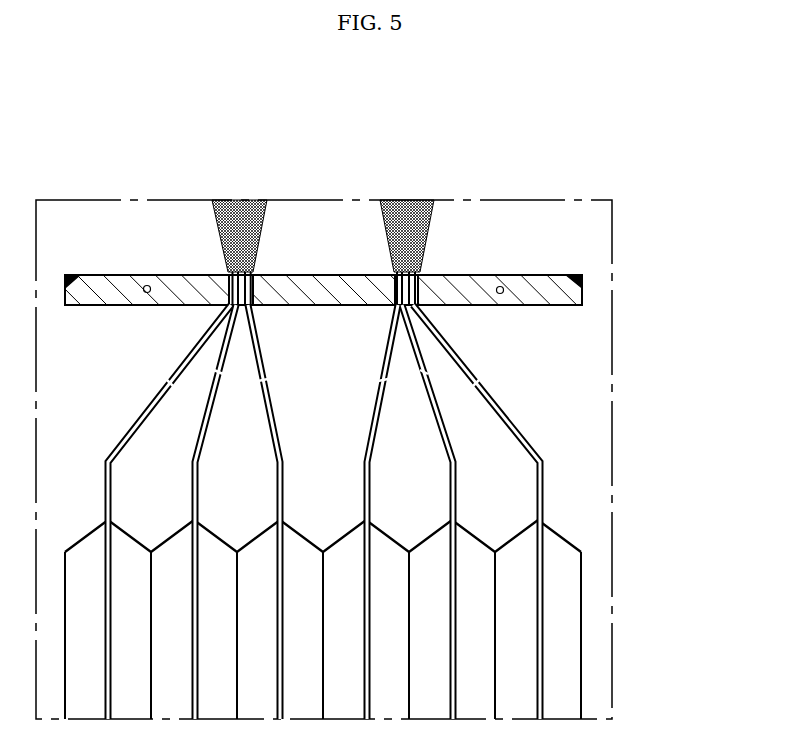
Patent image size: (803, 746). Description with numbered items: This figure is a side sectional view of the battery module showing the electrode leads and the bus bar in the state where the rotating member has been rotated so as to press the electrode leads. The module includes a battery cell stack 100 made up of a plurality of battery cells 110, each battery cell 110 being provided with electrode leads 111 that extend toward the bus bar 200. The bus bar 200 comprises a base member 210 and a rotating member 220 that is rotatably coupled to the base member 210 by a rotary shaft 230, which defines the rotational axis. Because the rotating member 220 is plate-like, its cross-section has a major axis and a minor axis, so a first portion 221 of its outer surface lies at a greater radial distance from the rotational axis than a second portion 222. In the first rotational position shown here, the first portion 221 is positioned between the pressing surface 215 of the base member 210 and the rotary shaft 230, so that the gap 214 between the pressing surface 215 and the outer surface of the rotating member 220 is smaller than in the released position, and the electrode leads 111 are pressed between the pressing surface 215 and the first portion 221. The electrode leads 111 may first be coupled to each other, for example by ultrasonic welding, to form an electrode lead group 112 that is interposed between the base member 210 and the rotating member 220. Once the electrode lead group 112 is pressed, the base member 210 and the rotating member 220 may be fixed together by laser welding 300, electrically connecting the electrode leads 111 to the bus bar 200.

The battery cell stack 100 is at (633, 518).
The battery cells 110 is at (565, 597).
The electrode leads 111 is at (275, 417).
The electrode lead group 112 is at (258, 252).
The bus bar 200 is at (327, 250).
The base member 210 is at (358, 282).
The gap 214 is at (228, 307).
The pressing surface 215 is at (253, 292).
The rotating member 220 is at (182, 283).
The first portion 221 is at (228, 270).
The second portion 222 is at (156, 304).
The rotary shaft 230 is at (147, 283).
The laser welding 300 is at (238, 213).